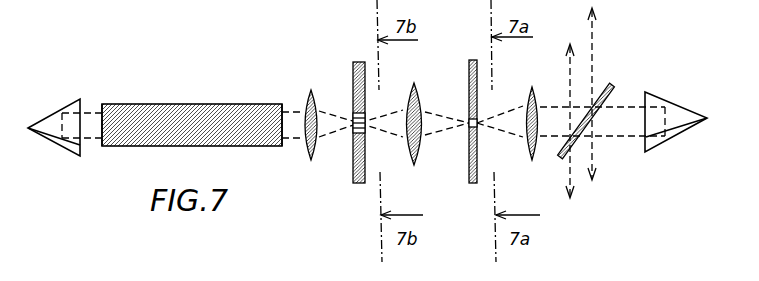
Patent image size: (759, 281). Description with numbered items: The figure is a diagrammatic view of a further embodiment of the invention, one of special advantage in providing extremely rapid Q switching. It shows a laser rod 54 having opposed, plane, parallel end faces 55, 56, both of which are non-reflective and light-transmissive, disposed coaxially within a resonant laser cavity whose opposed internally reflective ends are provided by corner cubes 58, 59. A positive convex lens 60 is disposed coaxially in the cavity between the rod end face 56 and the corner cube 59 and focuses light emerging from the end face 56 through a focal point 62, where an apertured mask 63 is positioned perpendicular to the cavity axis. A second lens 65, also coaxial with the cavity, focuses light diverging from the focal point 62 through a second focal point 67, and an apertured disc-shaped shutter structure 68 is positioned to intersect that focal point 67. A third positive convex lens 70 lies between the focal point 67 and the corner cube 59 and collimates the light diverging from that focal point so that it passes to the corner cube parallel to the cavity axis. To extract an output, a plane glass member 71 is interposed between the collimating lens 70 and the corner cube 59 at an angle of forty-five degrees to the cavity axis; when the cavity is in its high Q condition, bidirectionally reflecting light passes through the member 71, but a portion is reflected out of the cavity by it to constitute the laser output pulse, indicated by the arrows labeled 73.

The laser rod 54 is at (178, 104).
The end face 55 is at (103, 123).
The end face 56 is at (285, 112).
The corner cube 58 is at (63, 148).
The corner cube 59 is at (657, 147).
The positive convex lens 60 is at (310, 154).
The focal point 62 is at (353, 120).
The apertured mask 63 is at (355, 163).
The second lens 65 is at (421, 152).
The second focal point 67 is at (468, 122).
The apertured disc-shaped shutter structure 68 is at (478, 101).
The third positive convex lens 70 is at (530, 150).
The plane glass member 71 is at (612, 87).
The output beams 73 is at (608, 99).